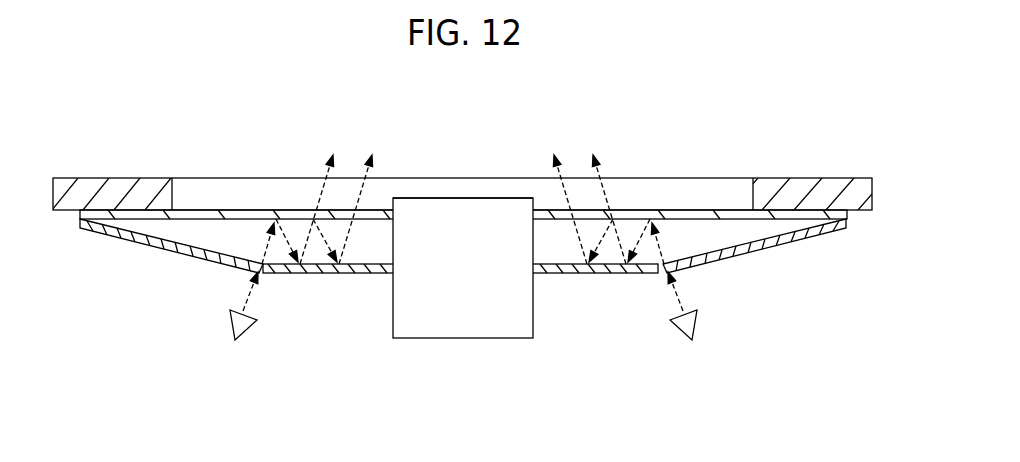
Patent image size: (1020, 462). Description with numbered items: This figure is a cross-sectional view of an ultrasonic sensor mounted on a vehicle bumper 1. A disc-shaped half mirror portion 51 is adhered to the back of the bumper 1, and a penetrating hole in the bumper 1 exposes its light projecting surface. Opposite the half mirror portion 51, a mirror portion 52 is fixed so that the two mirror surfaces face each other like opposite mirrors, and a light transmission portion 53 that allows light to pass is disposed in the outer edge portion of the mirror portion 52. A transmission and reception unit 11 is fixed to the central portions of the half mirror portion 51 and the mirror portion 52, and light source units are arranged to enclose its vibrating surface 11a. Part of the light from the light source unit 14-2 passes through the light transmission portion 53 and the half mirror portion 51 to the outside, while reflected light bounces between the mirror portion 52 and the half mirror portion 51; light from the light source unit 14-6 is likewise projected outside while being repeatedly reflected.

The bumper 1 is at (117, 178).
The half mirror portion 51 is at (254, 211).
The mirror portion 52 is at (335, 274).
The light transmission portion 53 is at (150, 246).
The transmission and reception unit 11 is at (448, 330).
The vibrating surface 11a is at (481, 198).
The light source unit 14-2 is at (233, 317).
The light source unit 14-6 is at (676, 322).